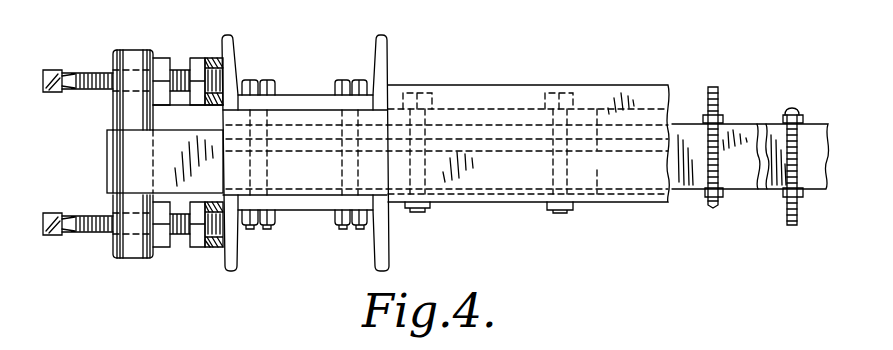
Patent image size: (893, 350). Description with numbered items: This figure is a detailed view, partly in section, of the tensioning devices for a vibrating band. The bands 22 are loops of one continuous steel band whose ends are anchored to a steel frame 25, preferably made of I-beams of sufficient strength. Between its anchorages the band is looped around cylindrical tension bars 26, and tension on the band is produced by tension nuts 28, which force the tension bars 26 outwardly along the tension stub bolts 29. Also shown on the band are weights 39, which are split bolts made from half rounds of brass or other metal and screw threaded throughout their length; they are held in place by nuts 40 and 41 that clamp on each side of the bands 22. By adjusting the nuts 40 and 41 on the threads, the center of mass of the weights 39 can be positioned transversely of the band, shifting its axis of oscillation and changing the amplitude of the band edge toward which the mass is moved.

The band 22 is at (198, 124).
The steel frame 25 is at (481, 85).
The cylindrical tension bar 26 is at (132, 55).
The tension nut 28 is at (197, 62).
The tension stub bolt 29 is at (99, 93).
The weight 39 is at (720, 93).
The nut 40 is at (703, 119).
The nut 41 is at (801, 116).